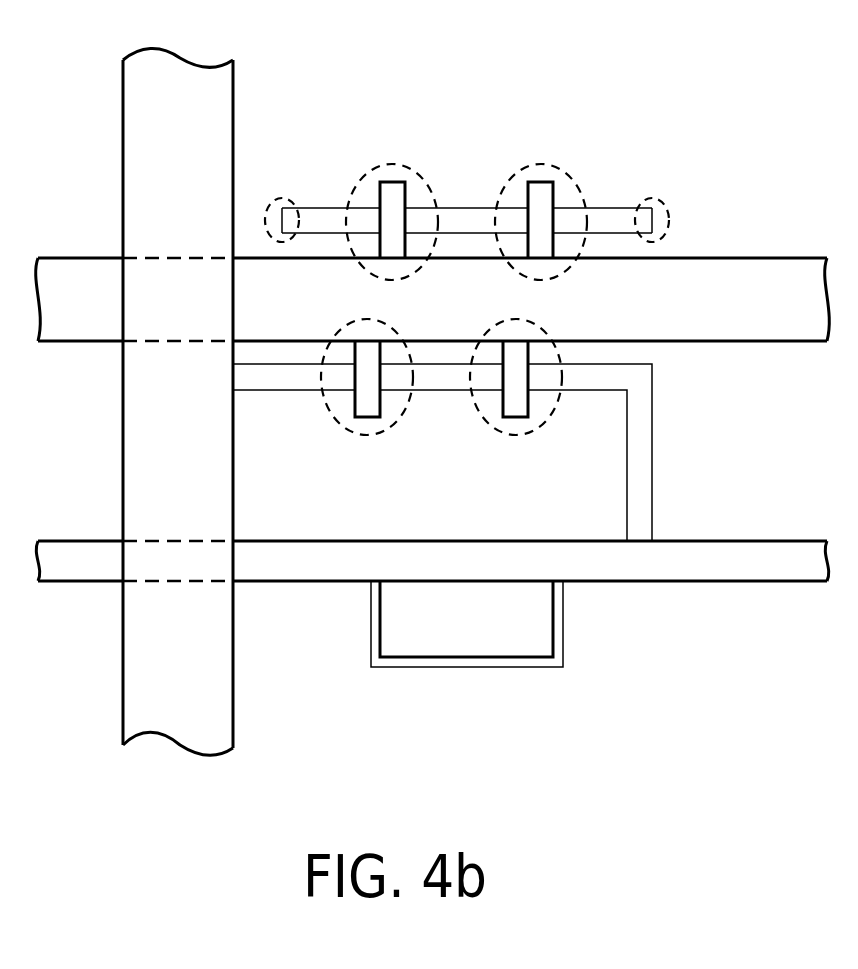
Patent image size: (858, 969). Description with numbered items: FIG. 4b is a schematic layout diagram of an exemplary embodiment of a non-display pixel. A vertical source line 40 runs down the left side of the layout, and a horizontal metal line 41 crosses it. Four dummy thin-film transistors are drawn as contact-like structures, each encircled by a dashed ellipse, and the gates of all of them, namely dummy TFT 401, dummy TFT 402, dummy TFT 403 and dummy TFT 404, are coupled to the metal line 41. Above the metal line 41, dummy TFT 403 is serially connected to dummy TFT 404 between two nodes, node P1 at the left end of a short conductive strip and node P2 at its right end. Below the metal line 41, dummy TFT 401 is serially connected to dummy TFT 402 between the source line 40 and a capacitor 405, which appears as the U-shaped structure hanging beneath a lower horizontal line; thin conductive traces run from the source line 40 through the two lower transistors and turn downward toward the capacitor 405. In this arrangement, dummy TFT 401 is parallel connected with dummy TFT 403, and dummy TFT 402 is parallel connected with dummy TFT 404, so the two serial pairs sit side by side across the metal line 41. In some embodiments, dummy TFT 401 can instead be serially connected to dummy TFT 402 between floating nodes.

The source line 40 is at (176, 62).
The metal line 41 is at (80, 258).
The dummy TFT 401 is at (367, 436).
The dummy TFT 402 is at (516, 436).
The dummy TFT 403 is at (395, 164).
The dummy TFT 404 is at (544, 164).
The capacitor 405 is at (485, 672).
The node P1 is at (283, 198).
The node P2 is at (653, 198).